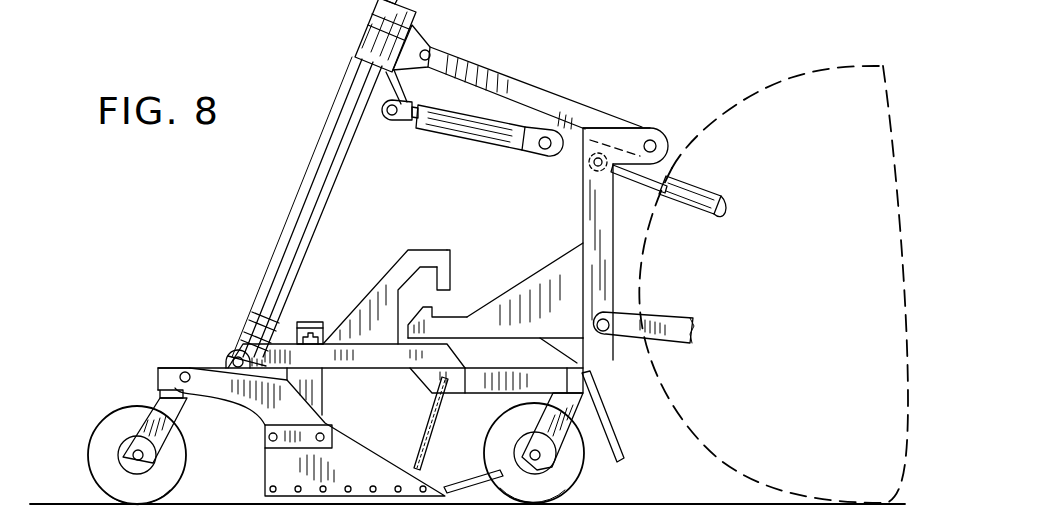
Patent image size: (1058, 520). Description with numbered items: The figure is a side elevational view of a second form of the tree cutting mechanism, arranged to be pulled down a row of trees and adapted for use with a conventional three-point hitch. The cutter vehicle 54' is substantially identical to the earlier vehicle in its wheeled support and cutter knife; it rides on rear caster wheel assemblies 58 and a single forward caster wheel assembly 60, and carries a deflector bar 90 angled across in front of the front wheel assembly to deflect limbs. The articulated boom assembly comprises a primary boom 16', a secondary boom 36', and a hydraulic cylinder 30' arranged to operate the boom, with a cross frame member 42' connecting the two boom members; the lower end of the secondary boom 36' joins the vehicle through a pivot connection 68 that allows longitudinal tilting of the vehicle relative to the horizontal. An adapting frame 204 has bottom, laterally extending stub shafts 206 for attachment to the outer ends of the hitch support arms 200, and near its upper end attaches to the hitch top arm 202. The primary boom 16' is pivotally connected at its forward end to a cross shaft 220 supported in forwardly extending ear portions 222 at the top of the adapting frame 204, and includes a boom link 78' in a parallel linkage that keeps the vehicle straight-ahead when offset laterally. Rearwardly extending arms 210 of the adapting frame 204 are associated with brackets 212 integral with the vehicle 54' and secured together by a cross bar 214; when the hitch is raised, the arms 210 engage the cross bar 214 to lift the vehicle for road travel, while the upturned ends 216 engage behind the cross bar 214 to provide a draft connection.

The cross frame member 42' is at (348, 36).
The primary boom 16' is at (517, 77).
The secondary boom 36' is at (309, 208).
The boom link 78' is at (282, 207).
The hydraulic cylinder 30' is at (472, 127).
The ear portions 222 is at (604, 130).
The cross shaft 220 is at (662, 147).
The top arm 202 is at (682, 213).
The adapting frame 204 is at (587, 203).
The brackets 212 is at (388, 273).
The cross bar 214 is at (453, 280).
The rearwardly extending arms 210 is at (540, 277).
The upturned ends 216 is at (448, 307).
The stub shafts 206 is at (610, 340).
The support arms 200 is at (681, 347).
The cutter vehicle 54' is at (222, 364).
The second pivot connection 68 is at (228, 358).
The rear caster wheel assemblies 58 is at (88, 444).
The forward caster wheel assembly 60 is at (588, 472).
The deflector bar 90 is at (610, 428).